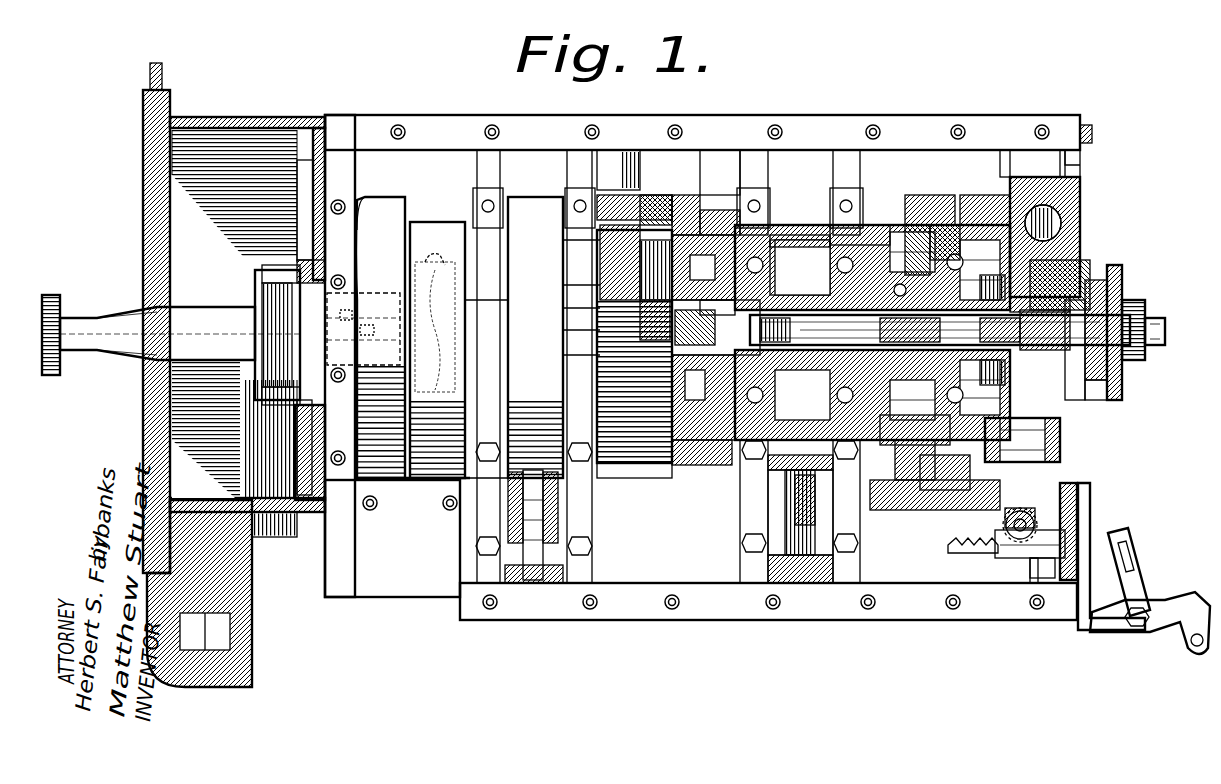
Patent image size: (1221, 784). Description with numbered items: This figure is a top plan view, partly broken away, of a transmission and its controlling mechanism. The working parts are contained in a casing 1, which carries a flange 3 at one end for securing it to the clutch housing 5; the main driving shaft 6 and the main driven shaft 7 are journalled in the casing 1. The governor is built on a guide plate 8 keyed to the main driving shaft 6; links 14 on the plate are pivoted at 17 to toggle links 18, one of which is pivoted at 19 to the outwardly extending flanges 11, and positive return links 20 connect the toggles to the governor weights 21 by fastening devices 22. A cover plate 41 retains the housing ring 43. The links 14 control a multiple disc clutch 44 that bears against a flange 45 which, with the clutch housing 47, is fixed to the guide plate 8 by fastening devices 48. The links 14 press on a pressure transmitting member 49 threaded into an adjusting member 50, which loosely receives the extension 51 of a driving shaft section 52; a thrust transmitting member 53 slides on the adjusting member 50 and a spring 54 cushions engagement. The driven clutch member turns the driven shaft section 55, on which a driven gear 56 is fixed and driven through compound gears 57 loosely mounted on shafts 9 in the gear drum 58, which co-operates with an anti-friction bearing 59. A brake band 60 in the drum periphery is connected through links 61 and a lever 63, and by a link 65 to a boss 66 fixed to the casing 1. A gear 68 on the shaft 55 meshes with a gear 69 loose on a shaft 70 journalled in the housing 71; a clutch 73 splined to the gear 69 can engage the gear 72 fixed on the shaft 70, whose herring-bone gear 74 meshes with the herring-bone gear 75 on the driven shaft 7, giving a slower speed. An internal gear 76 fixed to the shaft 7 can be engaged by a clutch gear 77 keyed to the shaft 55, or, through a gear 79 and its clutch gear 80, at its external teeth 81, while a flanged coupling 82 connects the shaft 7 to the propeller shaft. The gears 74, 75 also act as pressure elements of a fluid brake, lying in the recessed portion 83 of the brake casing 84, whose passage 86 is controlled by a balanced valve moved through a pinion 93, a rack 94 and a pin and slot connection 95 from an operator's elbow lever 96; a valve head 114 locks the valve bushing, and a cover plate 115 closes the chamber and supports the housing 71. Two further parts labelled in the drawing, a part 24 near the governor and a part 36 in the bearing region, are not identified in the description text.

The casing 1 is at (630, 622).
The flange 3 is at (1048, 150).
The clutch housing 5 is at (255, 585).
The main driving shaft 6 is at (117, 320).
The main driven shaft 7 is at (1150, 322).
The guide plate 8 is at (660, 412).
The shafts 9 is at (860, 175).
The outwardly extending flanges 11 is at (345, 282).
The links 14 is at (355, 345).
The pivot 17 is at (660, 240).
The toggle links 18 is at (367, 340).
The pivot 19 is at (585, 237).
The positive return links 20 is at (303, 440).
The governor weights 21 is at (600, 318).
The fastening devices 22 is at (595, 300).
The bracket 24 is at (1092, 490).
The bearing housing 36 is at (855, 292).
The cover plate 41 is at (590, 275).
The housing ring 43 is at (386, 216).
The clutch 44 is at (740, 190).
The flange 45 is at (845, 240).
The clutch housing 47 is at (725, 230).
The fastening devices 48 is at (700, 465).
The pressure transmitting member 49 is at (690, 385).
The adjusting member 50 is at (660, 335).
The extension 51 is at (665, 365).
The driving shaft section 52 is at (610, 340).
The thrust transmitting member 53 is at (760, 240).
The spring 54 is at (462, 300).
The driven shaft section 55 is at (900, 320).
The driven gear 56 is at (860, 372).
The compound gears 57 is at (815, 245).
The gear drum 58 is at (900, 200).
The anti-friction bearing 59 is at (730, 445).
The brake band 60 is at (538, 205).
The links 61 is at (525, 500).
The lever 63 is at (510, 525).
The link 65 is at (508, 570).
The boss 66 is at (478, 210).
The gear 68 is at (950, 326).
The gear 69 is at (860, 470).
The shaft 70 is at (1045, 440).
The housing 71 is at (900, 510).
The gear 72 is at (970, 555).
The clutch 73 is at (945, 500).
The herring-bone gear 74 is at (1075, 488).
The herring-bone gear 75 is at (1070, 285).
The internal gear 76 is at (1060, 260).
The clutch gear 77 is at (915, 447).
The gear 79 is at (910, 200).
The clutch gear 80 is at (945, 185).
The external teeth 81 is at (1045, 160).
The flanged coupling 82 is at (1120, 300).
The recessed portion 83 is at (1110, 400).
The casing 84 is at (1080, 168).
The passage 86 is at (1075, 230).
The pinion 93 is at (1040, 522).
The rack 94 is at (1022, 545).
The pin and slot connection 95 is at (1138, 548).
The elbow lever 96 is at (1160, 605).
The valve head 114 is at (1038, 585).
The cover plate 115 is at (992, 180).